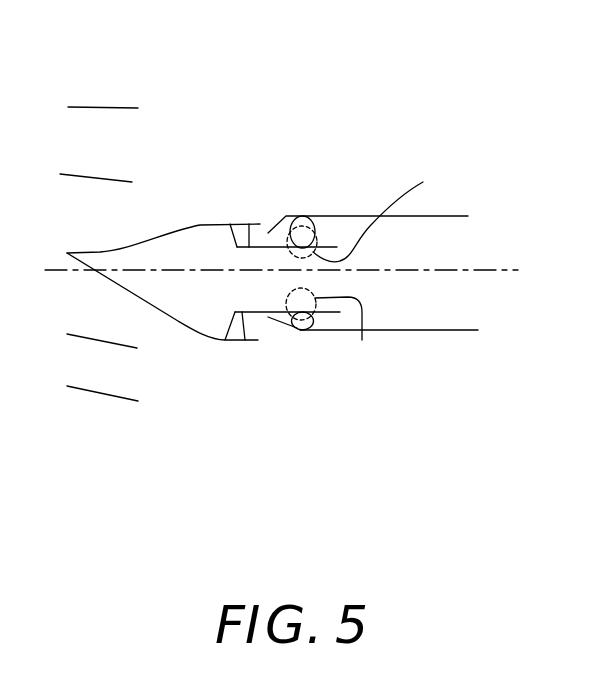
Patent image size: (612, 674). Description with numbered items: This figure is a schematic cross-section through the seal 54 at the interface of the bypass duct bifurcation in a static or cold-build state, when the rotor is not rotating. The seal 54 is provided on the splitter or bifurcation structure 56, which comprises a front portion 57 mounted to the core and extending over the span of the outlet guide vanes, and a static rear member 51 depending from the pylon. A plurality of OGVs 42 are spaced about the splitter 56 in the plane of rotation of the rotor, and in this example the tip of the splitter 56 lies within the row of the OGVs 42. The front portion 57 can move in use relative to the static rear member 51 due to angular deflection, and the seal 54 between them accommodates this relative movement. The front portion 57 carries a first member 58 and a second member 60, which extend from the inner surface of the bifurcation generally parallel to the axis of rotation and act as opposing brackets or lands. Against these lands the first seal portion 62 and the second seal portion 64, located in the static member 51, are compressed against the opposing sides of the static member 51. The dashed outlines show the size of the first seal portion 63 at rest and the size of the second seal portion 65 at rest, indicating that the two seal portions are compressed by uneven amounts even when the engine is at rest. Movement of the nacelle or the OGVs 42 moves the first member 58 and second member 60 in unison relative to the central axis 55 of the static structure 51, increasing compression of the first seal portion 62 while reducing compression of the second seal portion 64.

The outlet guide vanes 42 is at (88, 107).
The rear member 51 is at (437, 331).
The seal 54 is at (306, 205).
The central axis 55 is at (492, 270).
The bifurcation structure 56 is at (197, 224).
The front portion 57 is at (183, 327).
The first member 58 is at (250, 224).
The second member 60 is at (245, 340).
The first seal portion 62 is at (304, 232).
The first seal portion at rest 63 is at (368, 215).
The second seal portion 64 is at (297, 330).
The second seal portion at rest 65 is at (362, 340).